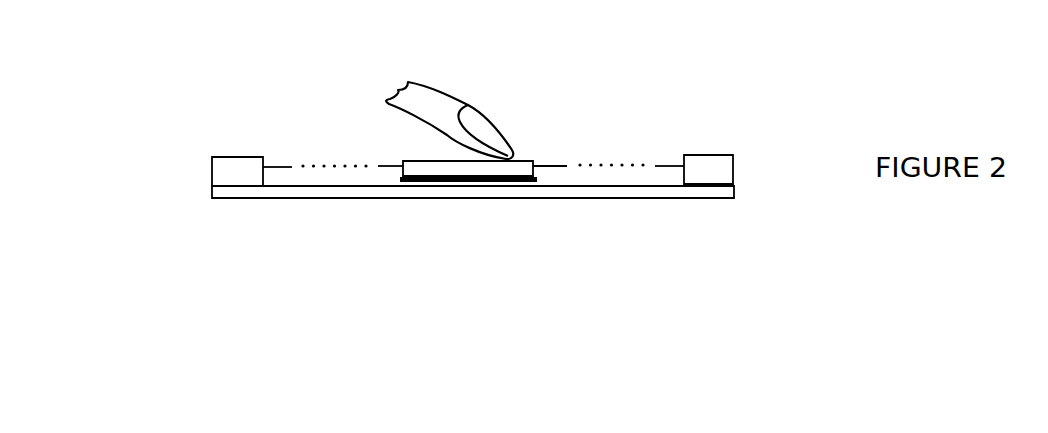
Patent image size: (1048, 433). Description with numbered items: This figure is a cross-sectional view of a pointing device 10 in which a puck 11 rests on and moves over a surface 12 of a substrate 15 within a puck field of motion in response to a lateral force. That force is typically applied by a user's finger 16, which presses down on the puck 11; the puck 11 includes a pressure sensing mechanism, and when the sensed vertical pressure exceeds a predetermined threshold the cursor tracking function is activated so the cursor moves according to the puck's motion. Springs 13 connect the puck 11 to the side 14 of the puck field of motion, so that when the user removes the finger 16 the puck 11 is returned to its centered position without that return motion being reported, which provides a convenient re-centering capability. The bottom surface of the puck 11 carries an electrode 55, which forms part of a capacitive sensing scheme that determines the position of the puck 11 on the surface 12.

The pointing device 10 is at (175, 133).
The puck 11 is at (467, 169).
The surface 12 is at (345, 185).
The springs 13 is at (553, 166).
The side 14 is at (722, 162).
The substrate 15 is at (492, 198).
The user's finger 16 is at (445, 96).
The electrode 55 is at (526, 182).